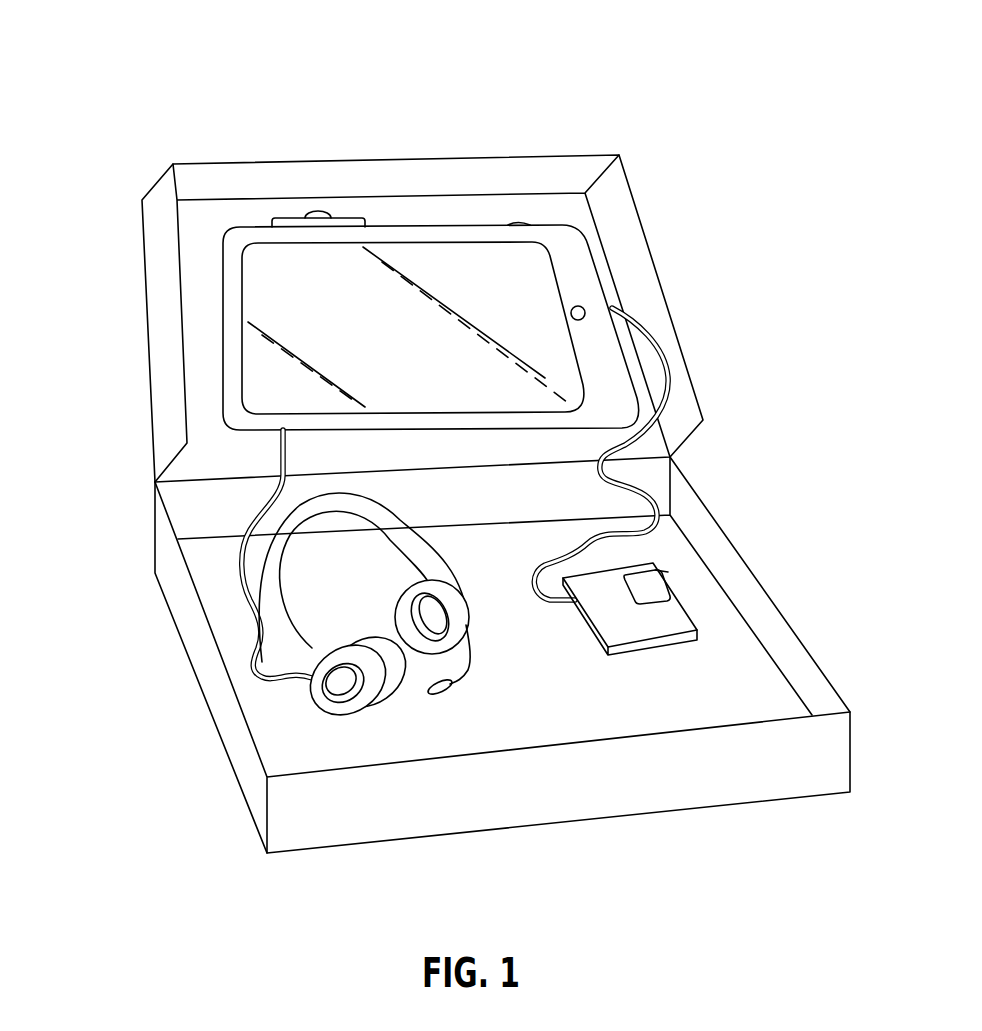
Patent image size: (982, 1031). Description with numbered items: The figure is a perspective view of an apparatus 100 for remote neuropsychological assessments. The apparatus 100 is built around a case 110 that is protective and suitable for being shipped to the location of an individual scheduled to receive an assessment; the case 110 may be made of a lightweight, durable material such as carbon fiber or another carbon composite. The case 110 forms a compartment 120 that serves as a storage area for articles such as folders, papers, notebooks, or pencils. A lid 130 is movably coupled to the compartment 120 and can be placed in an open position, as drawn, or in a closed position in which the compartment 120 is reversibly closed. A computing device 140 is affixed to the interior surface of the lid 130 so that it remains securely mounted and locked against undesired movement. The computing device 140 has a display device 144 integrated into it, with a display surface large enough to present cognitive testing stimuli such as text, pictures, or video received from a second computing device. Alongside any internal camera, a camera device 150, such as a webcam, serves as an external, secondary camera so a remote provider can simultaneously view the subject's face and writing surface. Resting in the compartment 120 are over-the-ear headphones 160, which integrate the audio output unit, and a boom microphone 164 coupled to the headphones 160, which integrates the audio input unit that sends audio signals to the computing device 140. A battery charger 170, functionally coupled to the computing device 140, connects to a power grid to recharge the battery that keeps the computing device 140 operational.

The apparatus 100 is at (720, 118).
The case 110 is at (187, 618).
The compartment 120 is at (743, 677).
The lid 130 is at (153, 245).
The computing device 140 is at (430, 227).
The display device 144 is at (345, 302).
The camera device 150 is at (295, 217).
The over-the-ear headphones 160 is at (413, 552).
The boom microphone 164 is at (458, 679).
The battery charger 170 is at (600, 642).